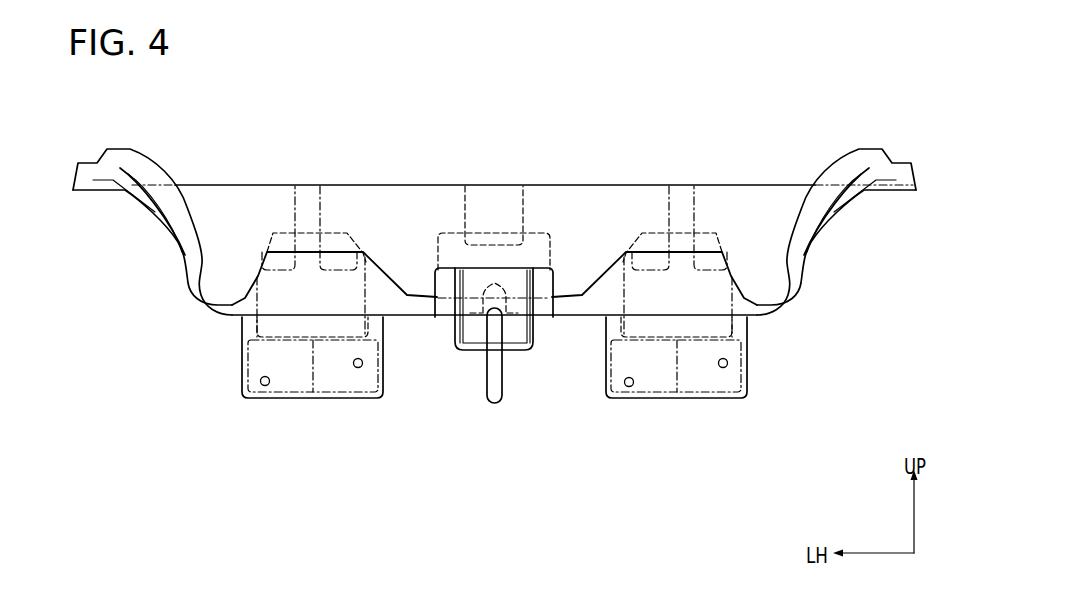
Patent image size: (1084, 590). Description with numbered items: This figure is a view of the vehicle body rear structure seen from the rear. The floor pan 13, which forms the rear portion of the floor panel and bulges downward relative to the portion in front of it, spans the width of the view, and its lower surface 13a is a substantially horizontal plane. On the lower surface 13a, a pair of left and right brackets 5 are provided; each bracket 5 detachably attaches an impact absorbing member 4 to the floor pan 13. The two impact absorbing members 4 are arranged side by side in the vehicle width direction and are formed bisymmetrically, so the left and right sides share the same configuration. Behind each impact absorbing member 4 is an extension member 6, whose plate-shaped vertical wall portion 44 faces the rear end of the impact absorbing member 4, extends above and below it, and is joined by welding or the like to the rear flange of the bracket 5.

The impact absorbing member 4 is at (234, 373).
The bracket 5 is at (284, 226).
The extension member 6 is at (326, 409).
The floor pan 13 is at (343, 288).
The lower surface 13a is at (580, 318).
The vertical wall portion 44 is at (250, 328).